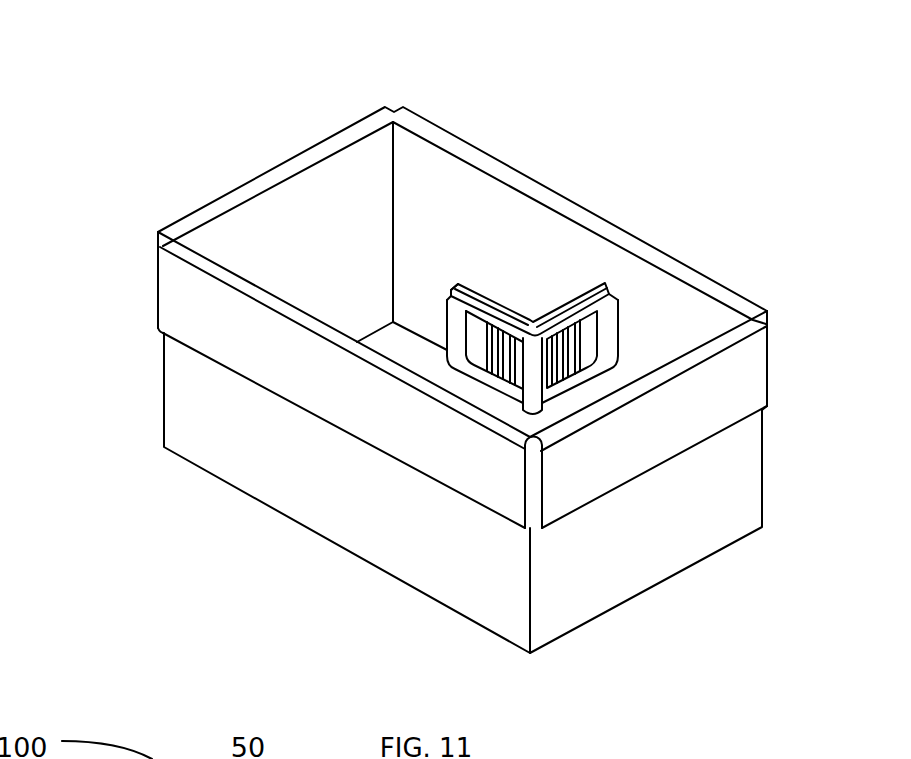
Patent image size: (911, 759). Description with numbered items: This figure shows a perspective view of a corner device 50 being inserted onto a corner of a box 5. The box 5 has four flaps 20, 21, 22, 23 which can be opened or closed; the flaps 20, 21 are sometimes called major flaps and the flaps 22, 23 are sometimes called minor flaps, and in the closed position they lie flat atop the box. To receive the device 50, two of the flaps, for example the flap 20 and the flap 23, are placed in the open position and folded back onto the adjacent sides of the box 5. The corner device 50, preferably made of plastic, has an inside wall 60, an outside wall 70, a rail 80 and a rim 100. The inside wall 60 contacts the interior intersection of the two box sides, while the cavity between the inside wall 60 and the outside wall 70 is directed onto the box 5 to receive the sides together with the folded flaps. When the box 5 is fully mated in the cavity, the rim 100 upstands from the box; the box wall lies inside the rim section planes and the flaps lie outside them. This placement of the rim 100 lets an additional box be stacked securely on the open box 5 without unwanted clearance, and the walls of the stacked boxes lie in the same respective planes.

The box 5 is at (714, 282).
The flap 20 is at (220, 362).
The flap 21 is at (477, 140).
The flap 22 is at (157, 232).
The flap 23 is at (697, 450).
The corner device 50 is at (591, 214).
The inside wall 60 is at (617, 303).
The outside wall 70 is at (618, 333).
The rail 80 is at (453, 293).
The rim 100 is at (487, 303).